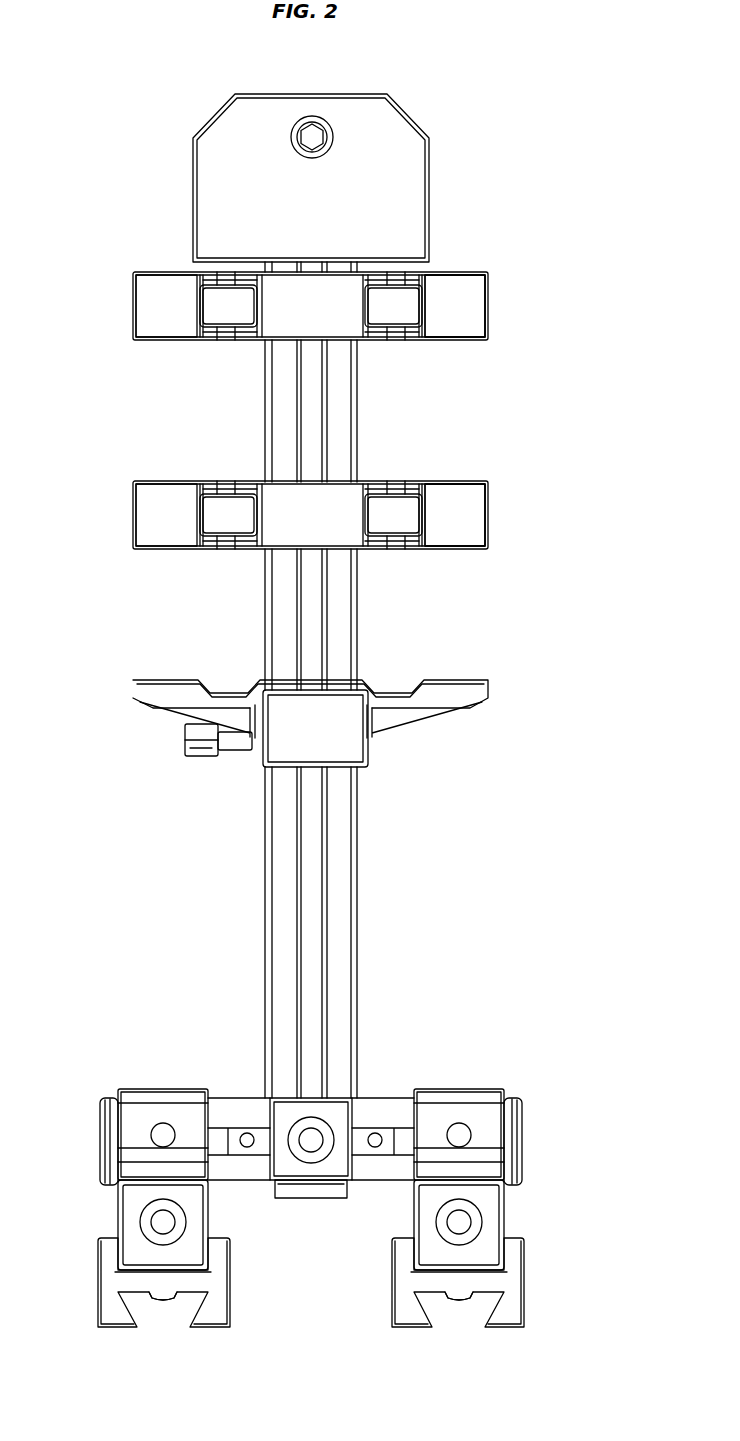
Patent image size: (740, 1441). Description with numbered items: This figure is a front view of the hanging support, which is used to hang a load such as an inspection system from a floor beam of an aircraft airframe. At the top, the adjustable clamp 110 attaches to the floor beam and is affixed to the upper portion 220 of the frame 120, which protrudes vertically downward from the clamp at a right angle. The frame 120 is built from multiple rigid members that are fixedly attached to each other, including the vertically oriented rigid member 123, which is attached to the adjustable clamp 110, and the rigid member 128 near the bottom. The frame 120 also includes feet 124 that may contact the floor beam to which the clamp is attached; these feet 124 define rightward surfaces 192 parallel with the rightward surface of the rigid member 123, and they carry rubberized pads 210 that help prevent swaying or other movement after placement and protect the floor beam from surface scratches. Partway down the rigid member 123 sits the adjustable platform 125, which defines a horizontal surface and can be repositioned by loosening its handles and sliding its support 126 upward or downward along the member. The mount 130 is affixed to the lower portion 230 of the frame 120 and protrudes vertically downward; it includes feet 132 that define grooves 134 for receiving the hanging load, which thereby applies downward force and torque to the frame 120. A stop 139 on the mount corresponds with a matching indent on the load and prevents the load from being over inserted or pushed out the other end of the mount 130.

The adjustable clamp 110 is at (428, 162).
The frame 120 is at (437, 891).
The rigid member 123 is at (357, 400).
The feet 124 is at (490, 303).
The adjustable platform 125 is at (148, 696).
The support 126 is at (278, 752).
The rigid member 128 is at (286, 1167).
The mount 130 is at (557, 1090).
The feet 132 is at (108, 1262).
The grooves 134 is at (155, 1322).
The stop 139 is at (171, 1314).
The rightward surfaces 192 is at (463, 281).
The rubberized pads 210 is at (147, 317).
The upper portion 220 is at (585, 98).
The lower portion 230 is at (620, 1087).